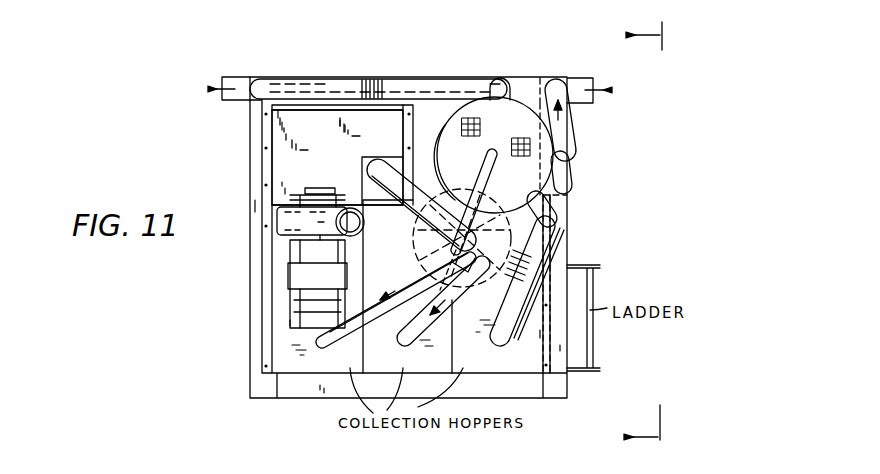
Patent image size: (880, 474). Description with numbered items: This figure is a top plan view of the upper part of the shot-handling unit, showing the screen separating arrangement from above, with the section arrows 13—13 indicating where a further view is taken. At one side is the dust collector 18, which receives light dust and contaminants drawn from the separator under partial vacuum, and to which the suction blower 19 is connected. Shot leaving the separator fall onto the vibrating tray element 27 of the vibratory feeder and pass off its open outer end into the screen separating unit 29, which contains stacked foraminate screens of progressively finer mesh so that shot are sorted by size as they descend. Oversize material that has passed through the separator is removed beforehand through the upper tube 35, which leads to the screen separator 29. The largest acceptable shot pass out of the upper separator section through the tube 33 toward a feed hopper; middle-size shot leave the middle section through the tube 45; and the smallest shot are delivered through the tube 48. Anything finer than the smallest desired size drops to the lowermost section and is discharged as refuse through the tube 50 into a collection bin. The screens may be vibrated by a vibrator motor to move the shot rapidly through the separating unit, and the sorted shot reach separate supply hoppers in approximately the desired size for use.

The section line 13- 13 is at (625, 236).
The dust collector 18 is at (305, 120).
The suction blower 19 is at (300, 308).
The tray element 27 is at (488, 153).
The screen separating unit 29 is at (540, 133).
The tube 33 is at (382, 312).
The upper tube 35 is at (225, 102).
The tube 45 is at (452, 298).
The tube 48 is at (510, 330).
The tube 50 is at (592, 78).